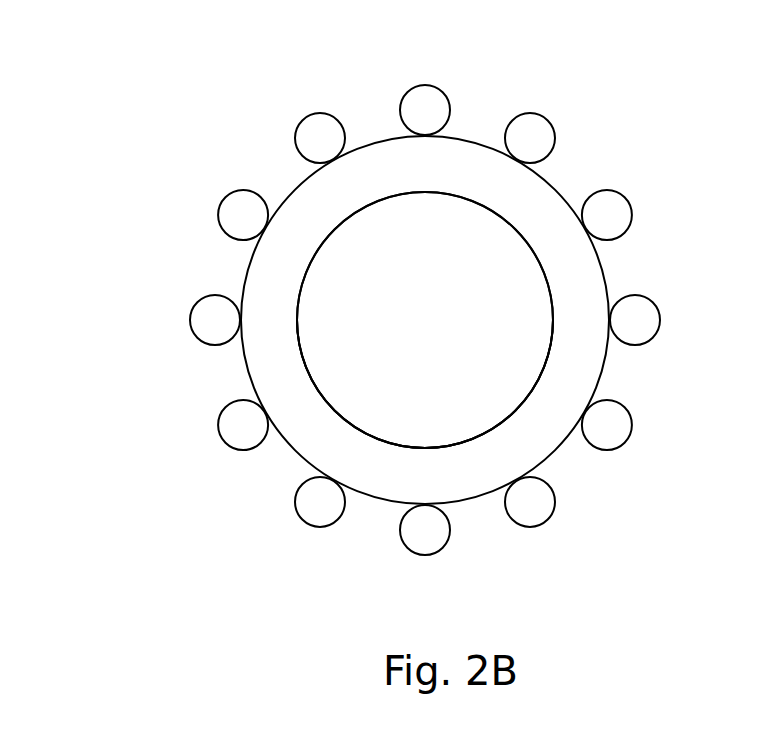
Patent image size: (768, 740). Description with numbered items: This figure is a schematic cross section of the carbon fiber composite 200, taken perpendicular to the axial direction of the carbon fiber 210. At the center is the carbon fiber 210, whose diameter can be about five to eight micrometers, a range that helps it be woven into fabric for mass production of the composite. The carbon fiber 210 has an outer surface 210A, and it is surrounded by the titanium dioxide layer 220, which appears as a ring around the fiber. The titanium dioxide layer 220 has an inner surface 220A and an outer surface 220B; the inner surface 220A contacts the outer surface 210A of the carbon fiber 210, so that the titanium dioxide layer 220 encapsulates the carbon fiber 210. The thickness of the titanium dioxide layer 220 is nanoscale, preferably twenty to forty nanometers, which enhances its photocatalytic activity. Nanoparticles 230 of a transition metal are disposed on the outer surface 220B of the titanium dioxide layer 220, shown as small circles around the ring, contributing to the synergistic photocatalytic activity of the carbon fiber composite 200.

The carbon fiber composite 200 is at (80, 50).
The carbon fiber 210 is at (422, 348).
The outer surface of the carbon fiber 210A is at (447, 447).
The titanium dioxide layer 220 is at (415, 298).
The inner surface of the titanium dioxide layer 220A is at (543, 275).
The outer surface of the titanium dioxide layer 220B is at (555, 187).
The nanoparticles of a transition metal 230 is at (318, 498).